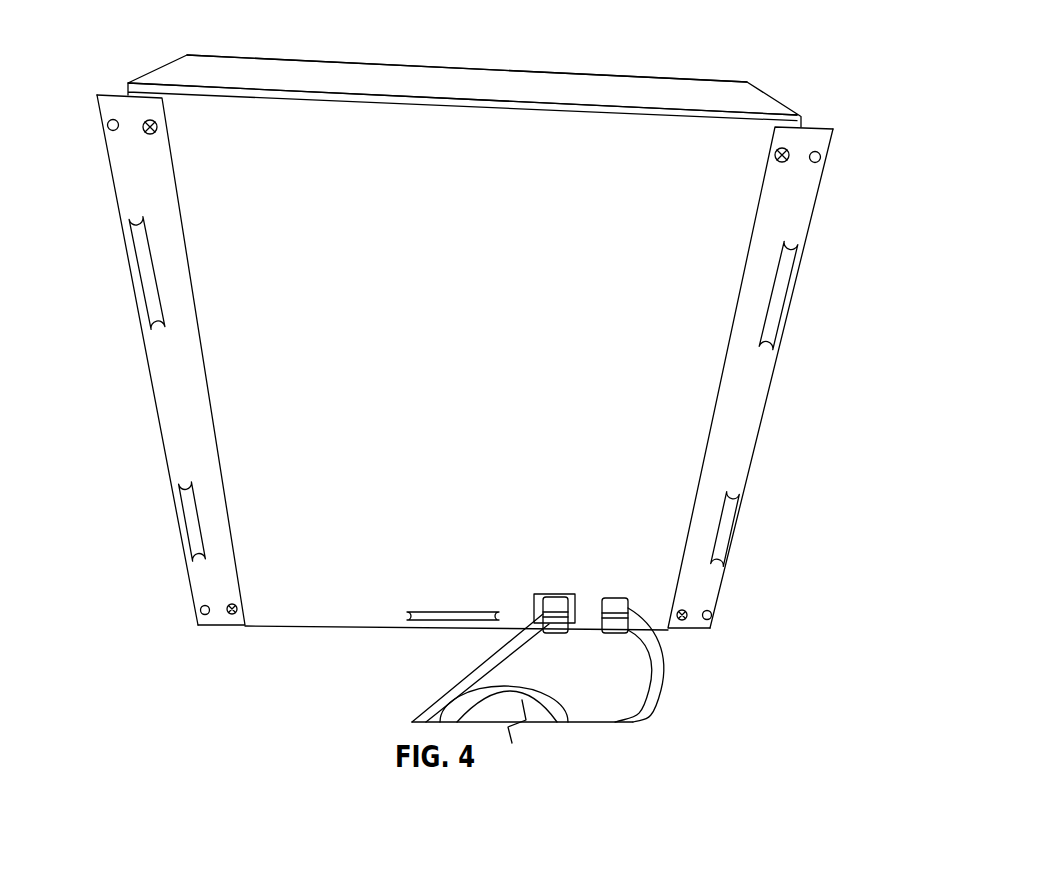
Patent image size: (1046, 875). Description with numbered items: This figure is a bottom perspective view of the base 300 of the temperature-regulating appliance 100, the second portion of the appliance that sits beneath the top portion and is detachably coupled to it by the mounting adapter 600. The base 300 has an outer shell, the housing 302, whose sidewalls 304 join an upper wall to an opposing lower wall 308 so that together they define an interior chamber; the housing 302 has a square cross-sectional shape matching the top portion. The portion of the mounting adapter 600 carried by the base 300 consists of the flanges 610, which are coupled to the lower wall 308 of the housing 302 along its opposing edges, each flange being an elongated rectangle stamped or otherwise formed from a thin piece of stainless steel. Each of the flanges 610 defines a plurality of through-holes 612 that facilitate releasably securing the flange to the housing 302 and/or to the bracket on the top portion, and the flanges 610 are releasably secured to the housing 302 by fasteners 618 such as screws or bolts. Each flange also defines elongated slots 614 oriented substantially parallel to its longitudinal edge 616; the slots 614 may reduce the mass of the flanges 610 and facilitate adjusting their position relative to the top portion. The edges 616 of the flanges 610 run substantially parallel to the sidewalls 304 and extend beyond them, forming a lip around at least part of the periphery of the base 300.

The temperature-regulating appliance 100 is at (95, 34).
The base 300 is at (515, 377).
The housing 302 is at (696, 92).
The sidewalls 304 is at (427, 80).
The lower wall 308 is at (310, 614).
The mounting adapter 600 is at (150, 417).
The flanges 610 is at (464, 408).
The through-holes 612 is at (108, 128).
The slots 614 is at (140, 272).
The edge 616 is at (117, 204).
The fasteners 618 is at (143, 131).